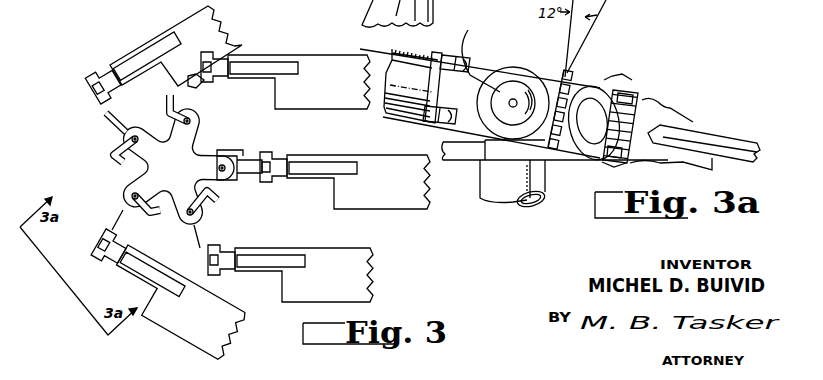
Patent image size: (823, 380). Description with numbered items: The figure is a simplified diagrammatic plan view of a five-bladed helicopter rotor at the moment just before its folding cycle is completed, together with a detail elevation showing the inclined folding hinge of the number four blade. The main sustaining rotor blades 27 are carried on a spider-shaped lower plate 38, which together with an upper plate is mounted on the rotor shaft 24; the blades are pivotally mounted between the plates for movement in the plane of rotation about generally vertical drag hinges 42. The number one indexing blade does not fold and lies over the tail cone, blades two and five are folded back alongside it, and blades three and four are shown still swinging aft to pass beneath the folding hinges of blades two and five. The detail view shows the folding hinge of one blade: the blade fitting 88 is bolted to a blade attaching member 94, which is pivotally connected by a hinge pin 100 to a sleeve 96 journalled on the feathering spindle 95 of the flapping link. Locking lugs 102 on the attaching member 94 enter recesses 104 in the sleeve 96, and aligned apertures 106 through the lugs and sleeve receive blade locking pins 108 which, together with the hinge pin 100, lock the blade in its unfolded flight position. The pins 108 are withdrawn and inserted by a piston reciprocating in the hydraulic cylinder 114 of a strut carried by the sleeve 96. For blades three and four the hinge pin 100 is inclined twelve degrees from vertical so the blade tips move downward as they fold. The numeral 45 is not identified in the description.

In FIG. 3A, the shaft 24 is at (480, 167).
In FIG. 3, the main sustaining rotor blades 27 is at (180, 22).
In FIG. 3A, the main sustaining rotor blades 27 is at (730, 137).
In FIG. 3A, the lower plate 38 is at (445, 148).
In FIG. 3, the drag hinges 42 is at (122, 167).
In FIG. 3, the link 45 is at (108, 128).
In FIG. 3A, the fitting 88 is at (650, 117).
In FIG. 3A, the blade attaching member 94 is at (606, 78).
In FIG. 3A, the spindle 95 is at (512, 98).
In FIG. 3A, the sleeve 96 is at (560, 70).
In FIG. 3, the hinge pin 100 is at (108, 97).
In FIG. 3A, the hinge pin 100 is at (578, 88).
In FIG. 3A, the locking lugs 102 is at (632, 92).
In FIG. 3A, the recesses 104 is at (428, 105).
In FIG. 3A, the aligned apertures 106 is at (481, 55).
In FIG. 3A, the blade locking pins 108 is at (393, 48).
In FIG. 3A, the cylinder 114 is at (466, 65).